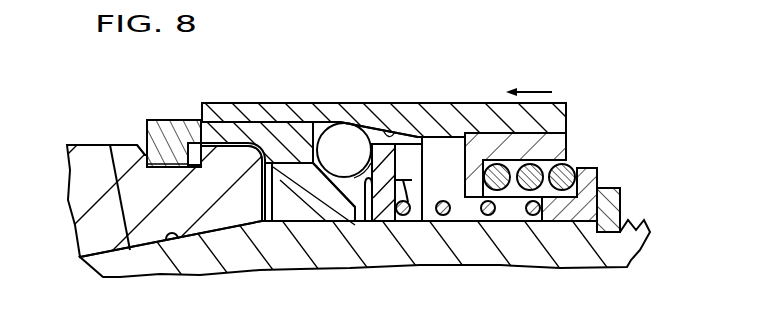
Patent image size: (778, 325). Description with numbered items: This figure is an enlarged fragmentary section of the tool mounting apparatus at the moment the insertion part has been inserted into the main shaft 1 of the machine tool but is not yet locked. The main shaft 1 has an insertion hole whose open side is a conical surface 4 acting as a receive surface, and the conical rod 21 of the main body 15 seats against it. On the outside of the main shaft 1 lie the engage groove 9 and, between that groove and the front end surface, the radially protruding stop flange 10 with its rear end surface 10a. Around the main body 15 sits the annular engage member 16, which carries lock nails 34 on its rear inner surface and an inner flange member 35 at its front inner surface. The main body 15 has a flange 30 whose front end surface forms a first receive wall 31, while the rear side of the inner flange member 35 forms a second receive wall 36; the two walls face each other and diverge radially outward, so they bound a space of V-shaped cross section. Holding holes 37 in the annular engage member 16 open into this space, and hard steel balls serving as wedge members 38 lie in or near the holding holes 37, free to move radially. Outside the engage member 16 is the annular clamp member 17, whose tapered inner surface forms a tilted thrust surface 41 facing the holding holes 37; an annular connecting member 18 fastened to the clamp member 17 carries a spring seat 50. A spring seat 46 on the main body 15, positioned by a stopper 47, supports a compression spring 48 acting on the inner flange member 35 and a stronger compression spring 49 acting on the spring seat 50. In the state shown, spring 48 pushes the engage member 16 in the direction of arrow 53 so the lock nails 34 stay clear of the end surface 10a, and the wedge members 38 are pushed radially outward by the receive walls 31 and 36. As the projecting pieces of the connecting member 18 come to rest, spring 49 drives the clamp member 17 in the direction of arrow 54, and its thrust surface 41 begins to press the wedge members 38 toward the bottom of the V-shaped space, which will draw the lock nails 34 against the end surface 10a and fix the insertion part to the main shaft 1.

The main shaft 1 is at (77, 143).
The conical surface 4 is at (110, 145).
The engage groove 9 is at (146, 118).
The lock nails 34 is at (170, 157).
The rear end surface 10a is at (184, 160).
The stop flange 10 is at (220, 153).
The annular engage member 16 is at (257, 128).
The holding holes 37 is at (316, 148).
The wedge members 38 is at (340, 138).
The tilted thrust surface 41 is at (387, 128).
The annular clamp member 17 is at (424, 113).
The spring seat 50 is at (473, 130).
The arrow 54 is at (533, 92).
The annular connecting member 18 is at (557, 148).
The compression spring 49 is at (557, 172).
The spring seat 46 is at (600, 180).
The stopper 47 is at (612, 205).
The conical rod 21 is at (170, 241).
The flange 30 is at (313, 190).
The first receive wall 31 is at (350, 193).
The second receive wall 36 is at (367, 186).
The inner flange member 35 is at (388, 150).
The arrow 53 is at (416, 215).
The compression spring 48 is at (474, 232).
The main body 15 is at (527, 252).